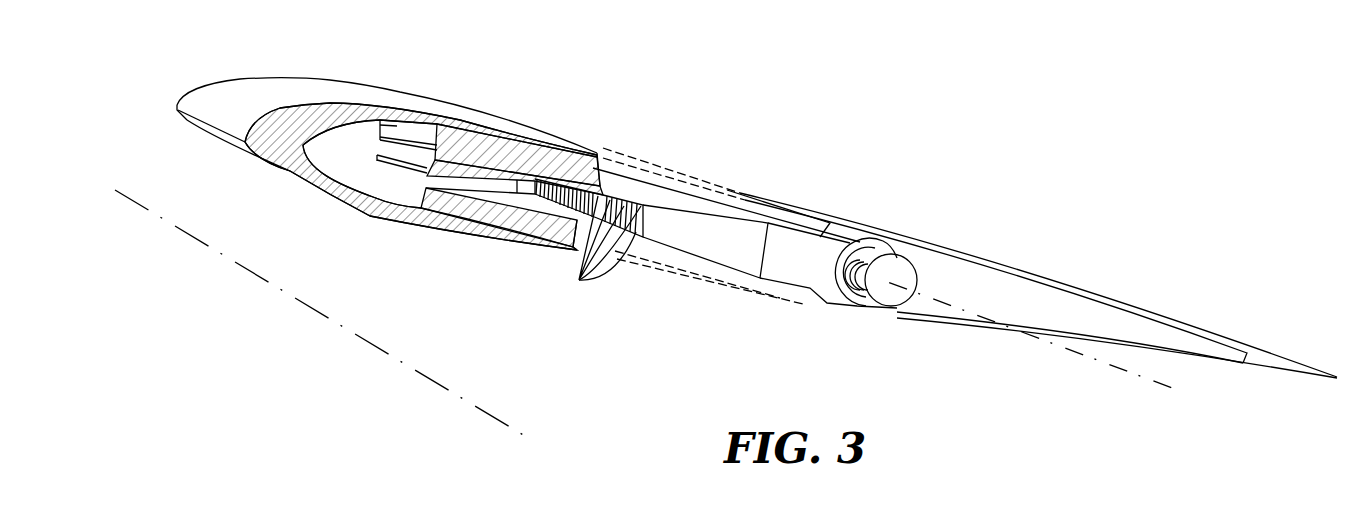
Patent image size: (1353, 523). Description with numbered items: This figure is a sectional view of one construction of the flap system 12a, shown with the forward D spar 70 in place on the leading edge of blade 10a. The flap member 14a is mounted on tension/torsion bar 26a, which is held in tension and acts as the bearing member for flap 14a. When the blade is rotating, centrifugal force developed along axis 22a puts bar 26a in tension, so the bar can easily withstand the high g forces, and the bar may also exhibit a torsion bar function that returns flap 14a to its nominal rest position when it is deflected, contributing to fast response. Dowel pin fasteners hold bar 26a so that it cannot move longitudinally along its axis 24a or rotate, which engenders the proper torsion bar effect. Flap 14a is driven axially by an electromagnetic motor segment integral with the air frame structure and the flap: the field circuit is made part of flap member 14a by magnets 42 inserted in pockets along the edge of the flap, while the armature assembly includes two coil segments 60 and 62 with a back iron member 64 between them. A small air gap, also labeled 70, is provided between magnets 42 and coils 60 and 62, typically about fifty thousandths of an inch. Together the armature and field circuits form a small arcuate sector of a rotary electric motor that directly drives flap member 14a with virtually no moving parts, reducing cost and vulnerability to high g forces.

The blade 10a is at (588, 78).
The flap system 12a is at (437, 87).
The flap member 14a is at (1073, 290).
The axis 22a is at (190, 240).
The axis of tension/torsion bar 24a is at (1095, 360).
The tension/torsion bar 26a is at (880, 281).
The magnets 42 is at (579, 280).
The coil segment 60 is at (380, 127).
The coil segment 62 is at (395, 183).
The back iron member 64 is at (378, 157).
The forward D spar 70 is at (330, 103).